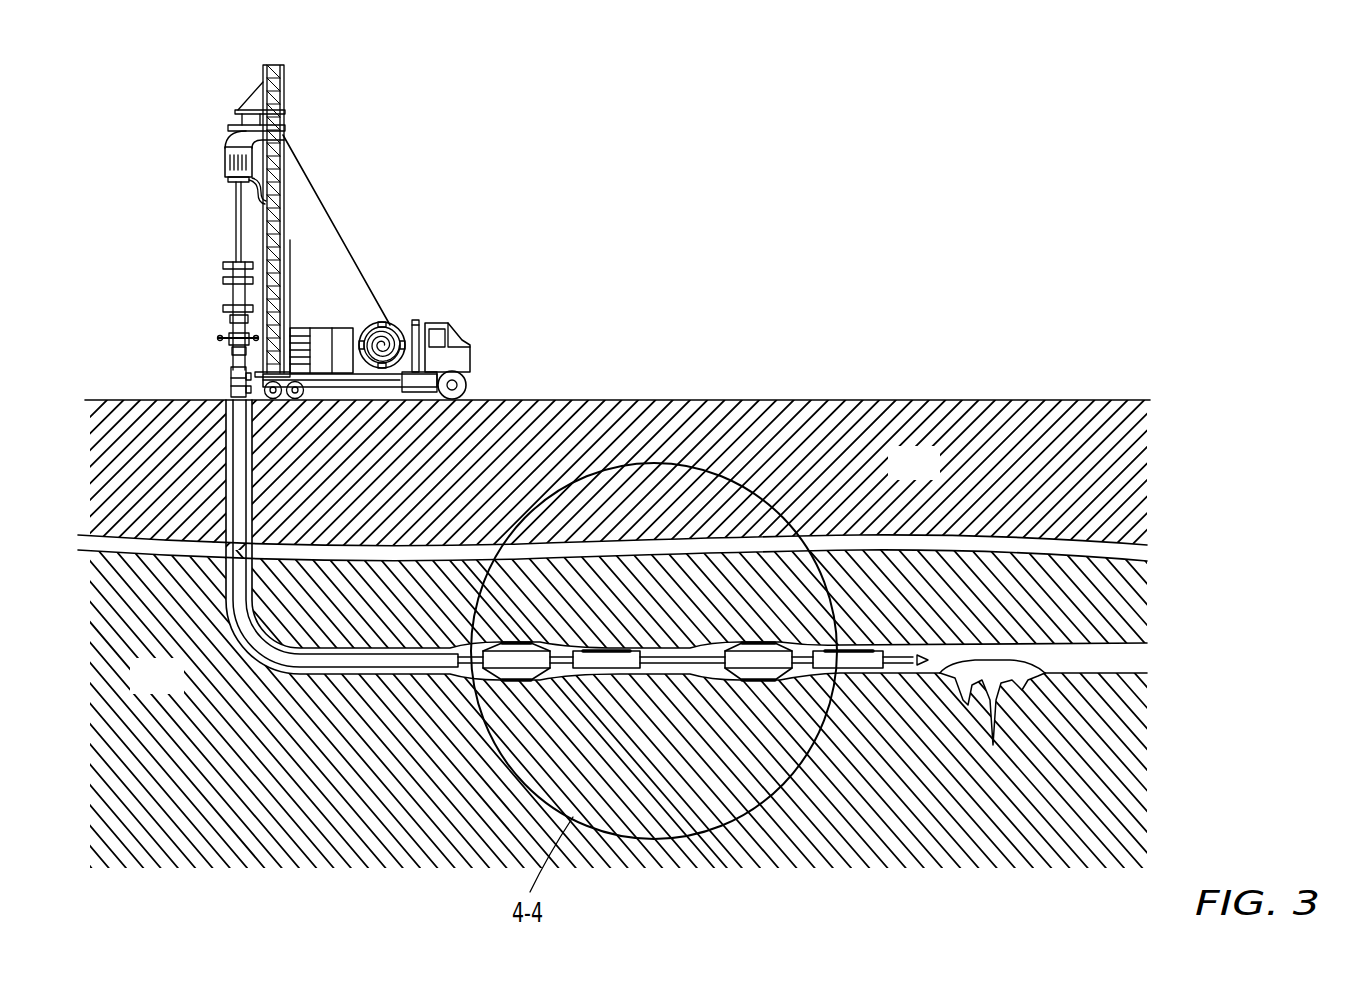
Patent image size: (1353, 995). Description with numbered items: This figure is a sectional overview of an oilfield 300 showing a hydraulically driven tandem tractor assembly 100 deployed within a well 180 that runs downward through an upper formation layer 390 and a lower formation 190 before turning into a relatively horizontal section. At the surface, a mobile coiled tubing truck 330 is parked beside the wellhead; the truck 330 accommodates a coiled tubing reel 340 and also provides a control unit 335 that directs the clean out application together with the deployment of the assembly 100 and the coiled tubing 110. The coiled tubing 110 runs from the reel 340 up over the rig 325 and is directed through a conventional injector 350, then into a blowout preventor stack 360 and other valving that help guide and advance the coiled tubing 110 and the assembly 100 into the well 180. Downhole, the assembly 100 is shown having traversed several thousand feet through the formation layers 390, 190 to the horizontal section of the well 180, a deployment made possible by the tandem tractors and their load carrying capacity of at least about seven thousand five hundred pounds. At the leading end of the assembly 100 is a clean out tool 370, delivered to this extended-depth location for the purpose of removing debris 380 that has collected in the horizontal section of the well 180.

The oilfield 300 is at (931, 354).
The formation layer 390 is at (933, 476).
The formation 190 is at (176, 688).
The well 180 is at (1119, 671).
The debris 380 is at (1013, 665).
The hydraulically driven tandem tractor assembly 100 is at (680, 665).
The clean out tool 370 is at (903, 665).
The coiled tubing rig 325 is at (405, 144).
The injector 350 is at (230, 142).
The coiled tubing 110 is at (350, 243).
The blowout preventor stack 360 is at (211, 268).
The control unit 335 is at (316, 327).
The coiled tubing reel 340 is at (396, 321).
The mobile coiled tubing truck 330 is at (451, 325).